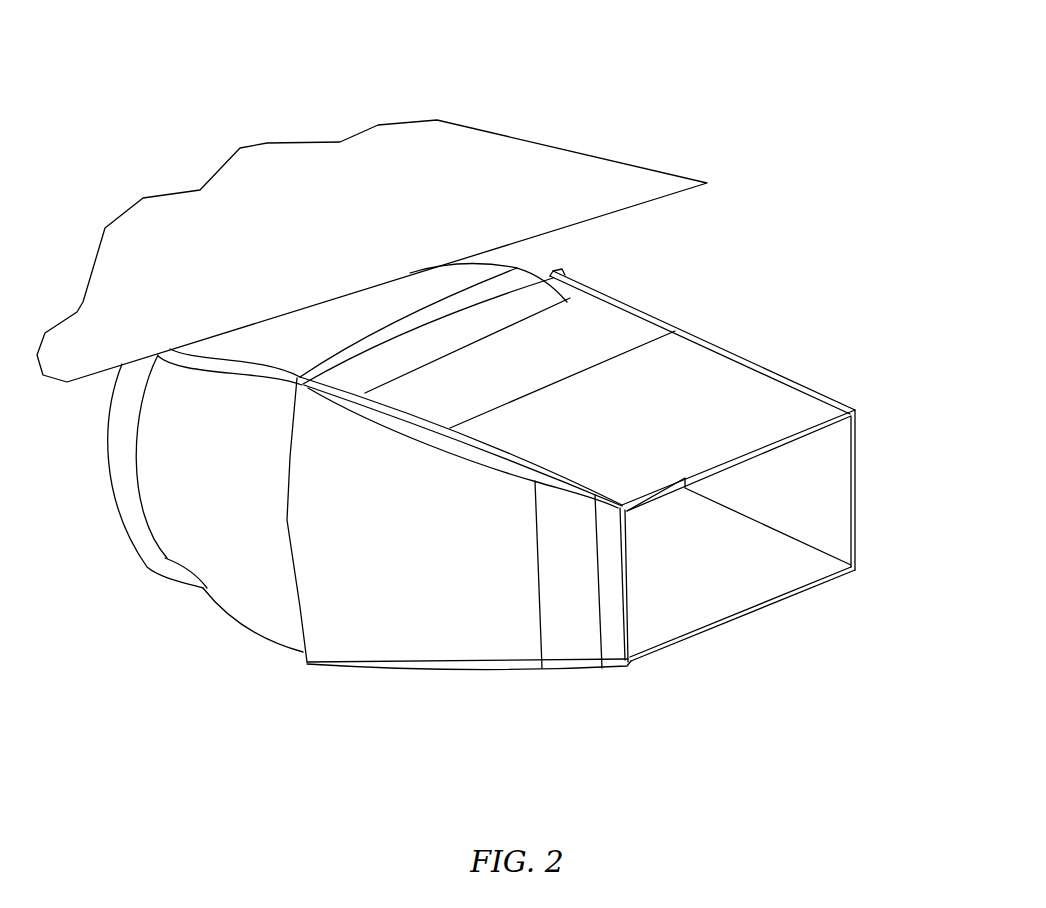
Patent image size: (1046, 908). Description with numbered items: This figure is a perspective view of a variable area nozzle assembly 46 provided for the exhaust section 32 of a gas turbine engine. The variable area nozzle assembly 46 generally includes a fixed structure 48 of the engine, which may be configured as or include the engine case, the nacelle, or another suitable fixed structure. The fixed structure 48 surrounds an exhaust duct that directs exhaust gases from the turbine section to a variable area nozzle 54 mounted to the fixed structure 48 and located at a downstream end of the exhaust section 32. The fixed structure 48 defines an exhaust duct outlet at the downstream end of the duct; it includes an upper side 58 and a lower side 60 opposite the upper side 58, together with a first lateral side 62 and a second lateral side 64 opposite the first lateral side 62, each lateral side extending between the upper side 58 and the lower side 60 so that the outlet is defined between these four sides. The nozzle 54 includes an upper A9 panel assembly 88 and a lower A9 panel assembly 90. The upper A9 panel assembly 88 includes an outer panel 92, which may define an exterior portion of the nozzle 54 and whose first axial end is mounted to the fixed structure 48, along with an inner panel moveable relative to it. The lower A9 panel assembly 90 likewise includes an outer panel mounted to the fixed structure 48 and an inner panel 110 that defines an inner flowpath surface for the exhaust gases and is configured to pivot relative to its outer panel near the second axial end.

The exhaust section 32 is at (719, 119).
The variable area nozzle assembly 46 is at (757, 168).
The fixed structure 48 is at (171, 599).
The variable area nozzle 54 is at (545, 498).
The upper side 58 is at (560, 334).
The lower side 60 is at (367, 676).
The first lateral side 62 is at (350, 580).
The second lateral side 64 is at (667, 309).
The upper A9 panel assembly 88 is at (765, 396).
The lower A9 panel assembly 90 is at (810, 604).
The outer panel 92 is at (730, 384).
The inner panel 110 is at (688, 602).